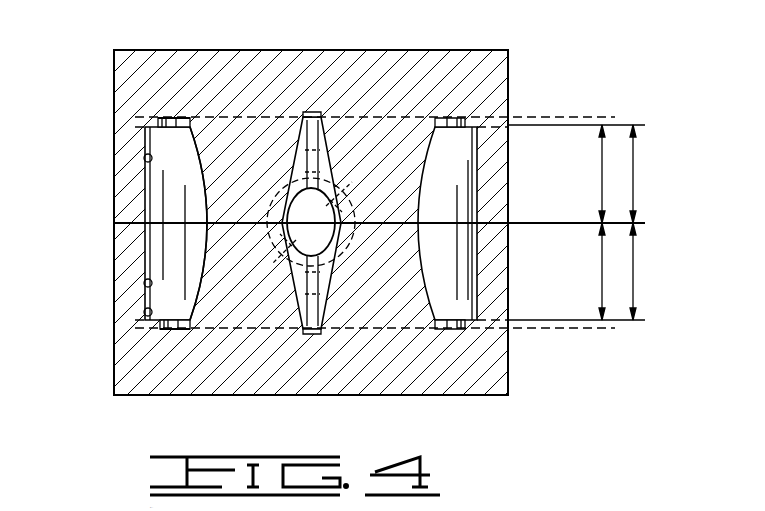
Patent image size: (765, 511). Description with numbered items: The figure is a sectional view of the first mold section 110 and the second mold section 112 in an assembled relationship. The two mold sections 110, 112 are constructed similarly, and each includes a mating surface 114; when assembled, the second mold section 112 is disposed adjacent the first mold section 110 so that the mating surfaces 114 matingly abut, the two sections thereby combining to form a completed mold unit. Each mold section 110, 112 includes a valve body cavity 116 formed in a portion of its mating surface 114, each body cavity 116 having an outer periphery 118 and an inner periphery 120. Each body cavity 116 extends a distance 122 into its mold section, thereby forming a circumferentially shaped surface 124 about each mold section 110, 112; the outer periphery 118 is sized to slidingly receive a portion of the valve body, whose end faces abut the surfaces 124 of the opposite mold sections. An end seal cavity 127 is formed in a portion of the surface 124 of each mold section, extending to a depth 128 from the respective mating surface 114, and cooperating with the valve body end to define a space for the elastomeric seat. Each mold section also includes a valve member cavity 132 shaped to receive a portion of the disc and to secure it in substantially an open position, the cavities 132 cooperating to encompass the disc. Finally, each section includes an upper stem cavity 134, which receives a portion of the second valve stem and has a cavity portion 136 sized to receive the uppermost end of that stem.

The first mold section 110 is at (500, 302).
The second mold section 112 is at (488, 132).
The mating surface 114 is at (114, 223).
The valve body cavity 116 is at (160, 247).
The outer periphery 118 is at (145, 158).
The inner periphery 120 is at (204, 174).
The distance 122 is at (633, 162).
The circumferentially shaped surface 124 is at (172, 127).
The end seal cavity 127 is at (182, 118).
The depth 128 is at (600, 172).
The valve member cavity 132 is at (322, 158).
The upper stem cavity 134 is at (348, 194).
The cavity portion 136 is at (276, 198).